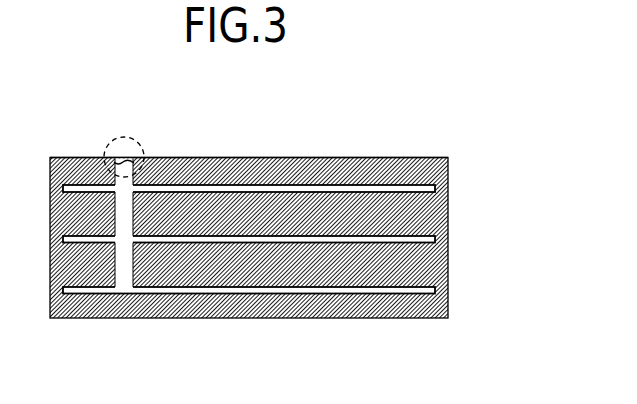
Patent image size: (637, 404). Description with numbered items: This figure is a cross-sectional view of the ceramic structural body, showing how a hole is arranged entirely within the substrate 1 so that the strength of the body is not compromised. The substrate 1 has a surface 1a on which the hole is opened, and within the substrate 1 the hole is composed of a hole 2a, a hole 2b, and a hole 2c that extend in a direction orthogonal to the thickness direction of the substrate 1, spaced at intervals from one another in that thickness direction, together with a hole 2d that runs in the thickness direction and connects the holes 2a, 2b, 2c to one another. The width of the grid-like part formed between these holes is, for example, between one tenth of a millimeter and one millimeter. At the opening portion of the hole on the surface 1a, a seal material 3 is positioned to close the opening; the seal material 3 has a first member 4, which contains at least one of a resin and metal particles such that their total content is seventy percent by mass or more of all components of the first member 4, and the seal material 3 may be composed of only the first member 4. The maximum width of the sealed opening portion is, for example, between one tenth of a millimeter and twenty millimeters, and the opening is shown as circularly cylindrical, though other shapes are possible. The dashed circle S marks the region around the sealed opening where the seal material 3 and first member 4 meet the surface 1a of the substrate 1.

The substrate 1 is at (367, 307).
The surface of substrate 1a is at (310, 157).
The hole 2a is at (435, 239).
The hole 2b is at (435, 188).
The hole 2c is at (435, 290).
The hole 2d is at (122, 273).
The seal material 3 is at (93, 121).
The first member 4 is at (122, 162).
The enlarged region S is at (143, 148).